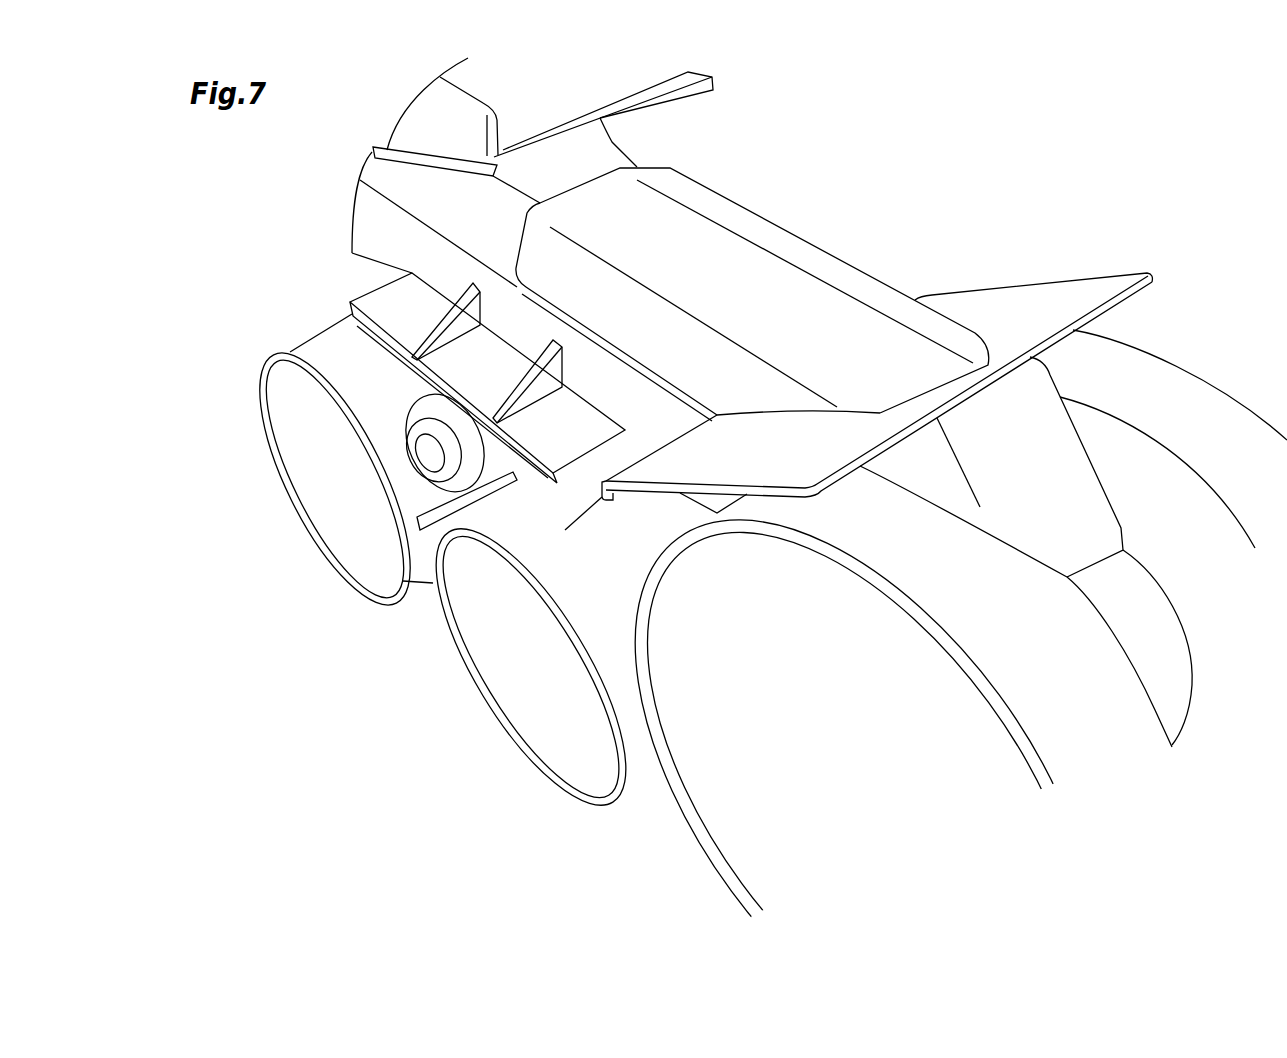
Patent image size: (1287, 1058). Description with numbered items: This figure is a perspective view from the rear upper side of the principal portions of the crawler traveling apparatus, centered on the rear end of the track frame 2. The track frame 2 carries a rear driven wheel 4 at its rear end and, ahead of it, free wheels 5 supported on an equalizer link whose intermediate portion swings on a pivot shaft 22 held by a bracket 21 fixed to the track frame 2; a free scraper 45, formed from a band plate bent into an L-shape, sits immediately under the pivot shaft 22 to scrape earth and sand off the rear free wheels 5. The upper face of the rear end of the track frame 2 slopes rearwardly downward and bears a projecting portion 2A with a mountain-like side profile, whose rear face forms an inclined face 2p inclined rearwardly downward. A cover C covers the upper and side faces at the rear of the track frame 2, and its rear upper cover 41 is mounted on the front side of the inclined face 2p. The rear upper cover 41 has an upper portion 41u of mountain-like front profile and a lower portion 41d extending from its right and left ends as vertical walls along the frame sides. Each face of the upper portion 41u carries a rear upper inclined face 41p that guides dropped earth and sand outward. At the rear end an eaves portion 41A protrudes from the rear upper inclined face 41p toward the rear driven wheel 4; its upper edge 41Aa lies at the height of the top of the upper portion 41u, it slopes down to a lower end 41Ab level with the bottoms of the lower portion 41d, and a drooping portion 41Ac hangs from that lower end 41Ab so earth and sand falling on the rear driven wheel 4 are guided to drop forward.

The track frame 2 is at (393, 245).
The projecting portion 2A is at (1060, 382).
The inclined face 2p is at (1063, 457).
The rear driven wheel 4 is at (1243, 510).
The free wheel 5 is at (387, 607).
The bracket 21 is at (410, 387).
The pivot shaft 22 is at (430, 455).
The rear upper cover 41 is at (733, 195).
The upper portion 41u is at (577, 187).
The lower portion 41d is at (513, 237).
The rear upper inclined face 41p is at (745, 273).
The eaves portion 41A is at (1027, 300).
The upper edge 41Aa is at (878, 450).
The lower end 41Ab is at (697, 420).
The drooping portion 41Ac is at (613, 493).
The free scraper 45 is at (420, 532).
The cover C is at (1132, 252).